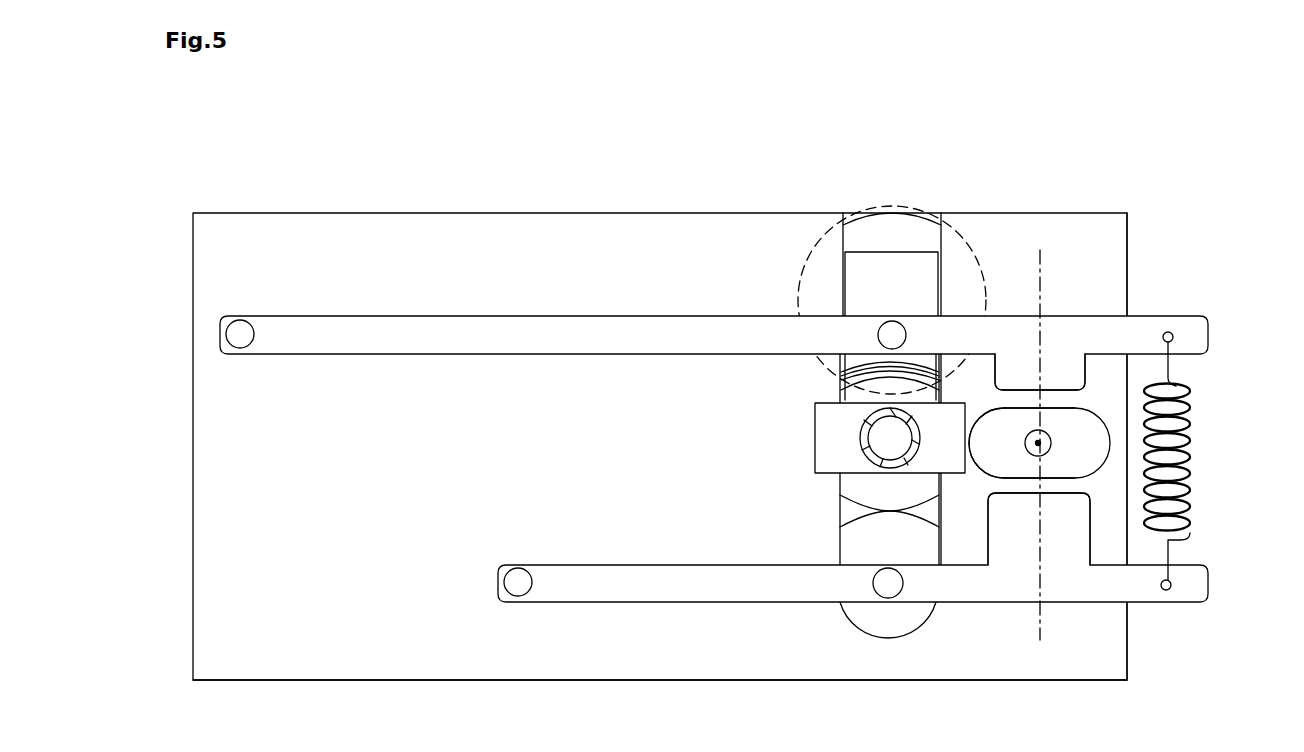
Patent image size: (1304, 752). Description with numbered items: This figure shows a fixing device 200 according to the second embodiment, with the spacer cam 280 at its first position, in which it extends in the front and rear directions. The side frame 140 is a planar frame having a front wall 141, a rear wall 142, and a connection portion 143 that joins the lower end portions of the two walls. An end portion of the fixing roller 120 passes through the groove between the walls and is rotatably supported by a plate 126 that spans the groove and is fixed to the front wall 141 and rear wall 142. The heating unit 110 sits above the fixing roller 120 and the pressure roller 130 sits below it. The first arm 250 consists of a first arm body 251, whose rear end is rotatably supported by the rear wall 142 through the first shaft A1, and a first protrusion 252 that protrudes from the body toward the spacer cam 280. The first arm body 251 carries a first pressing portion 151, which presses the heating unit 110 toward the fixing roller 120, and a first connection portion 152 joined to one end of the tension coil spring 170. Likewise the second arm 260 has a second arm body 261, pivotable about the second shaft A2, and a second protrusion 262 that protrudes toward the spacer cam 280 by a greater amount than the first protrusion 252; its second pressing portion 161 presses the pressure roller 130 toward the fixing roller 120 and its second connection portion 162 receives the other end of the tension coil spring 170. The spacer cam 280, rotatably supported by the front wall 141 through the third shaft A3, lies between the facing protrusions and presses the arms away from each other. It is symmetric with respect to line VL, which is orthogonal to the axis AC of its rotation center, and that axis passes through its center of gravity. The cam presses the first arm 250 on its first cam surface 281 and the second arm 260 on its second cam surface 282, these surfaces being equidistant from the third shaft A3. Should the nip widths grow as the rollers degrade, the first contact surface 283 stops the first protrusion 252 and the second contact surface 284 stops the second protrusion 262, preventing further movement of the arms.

The fixing device 200 is at (694, 422).
The heating unit 110 is at (905, 211).
The fixing roller 120 is at (848, 378).
The plate 126 is at (822, 440).
The pressure roller 130 is at (855, 540).
The side frame 140 is at (1083, 419).
The front wall 141 is at (1103, 258).
The rear wall 142 is at (633, 253).
The connection portion 143 is at (920, 656).
The first pressing portion 151 is at (884, 340).
The first connection portion 152 is at (1172, 333).
The second pressing portion 161 is at (884, 590).
The second connection portion 162 is at (1170, 590).
The tension coil spring 170 is at (1192, 418).
The first arm 250 is at (736, 281).
The first arm body 251 is at (468, 324).
The first protrusion 252 is at (1068, 372).
The second arm 260 is at (874, 604).
The second arm body 261 is at (682, 608).
The second protrusion 262 is at (1080, 536).
The spacer cam 280 is at (1097, 453).
The first cam surface 281 is at (1112, 440).
The second cam surface 282 is at (972, 462).
The first contact surface 283 is at (1030, 408).
The second contact surface 284 is at (1020, 480).
The first shaft A1 is at (242, 347).
The second shaft A2 is at (516, 568).
The third shaft A3 is at (1041, 458).
The axis of the rotation center AC is at (1033, 440).
The line VL is at (1040, 625).